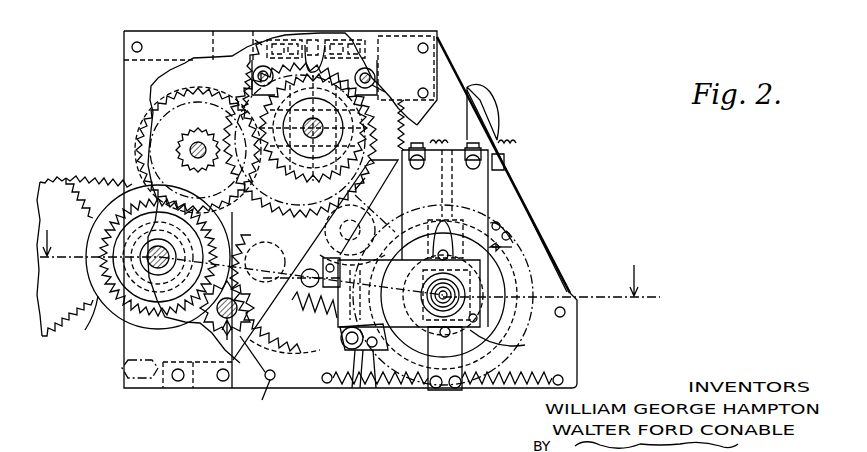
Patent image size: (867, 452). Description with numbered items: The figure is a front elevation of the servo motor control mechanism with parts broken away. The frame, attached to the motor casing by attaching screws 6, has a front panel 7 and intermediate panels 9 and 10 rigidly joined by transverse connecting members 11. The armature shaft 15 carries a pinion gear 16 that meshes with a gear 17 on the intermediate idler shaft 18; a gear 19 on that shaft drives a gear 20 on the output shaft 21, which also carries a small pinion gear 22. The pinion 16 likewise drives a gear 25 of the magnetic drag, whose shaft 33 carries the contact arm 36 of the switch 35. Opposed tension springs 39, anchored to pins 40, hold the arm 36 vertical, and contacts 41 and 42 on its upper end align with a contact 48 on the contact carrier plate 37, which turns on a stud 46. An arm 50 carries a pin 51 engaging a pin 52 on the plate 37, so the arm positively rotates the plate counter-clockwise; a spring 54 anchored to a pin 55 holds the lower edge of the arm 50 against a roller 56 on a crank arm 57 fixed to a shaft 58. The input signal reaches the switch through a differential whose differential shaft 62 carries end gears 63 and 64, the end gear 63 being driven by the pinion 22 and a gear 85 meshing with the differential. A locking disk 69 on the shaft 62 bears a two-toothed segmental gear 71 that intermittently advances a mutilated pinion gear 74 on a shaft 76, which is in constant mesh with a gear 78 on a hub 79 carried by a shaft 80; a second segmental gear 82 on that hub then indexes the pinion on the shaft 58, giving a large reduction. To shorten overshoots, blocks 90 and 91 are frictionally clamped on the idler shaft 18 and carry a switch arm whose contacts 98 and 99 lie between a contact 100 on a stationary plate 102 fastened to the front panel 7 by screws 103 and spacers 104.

The attaching screws 6 is at (350, 254).
The front panel 7 is at (437, 52).
The intermediate panel 9 is at (290, 392).
The intermediate panel 10 is at (332, 186).
The connecting members 11 is at (405, 35).
The armature shaft 15 is at (335, 236).
The pinion gear 16 is at (360, 192).
The gear 17 is at (218, 84).
The intermediate idler shaft 18 is at (313, 128).
The gear 19 is at (198, 150).
The gear 20 is at (193, 58).
The output shaft 21 is at (190, 148).
The pinion gear 22 is at (200, 124).
The gear 25 is at (505, 224).
The shaft 33 is at (462, 318).
The switch 35 is at (500, 247).
The contact arm 36 is at (462, 352).
The contact carrier plate 37 is at (490, 198).
The tension springs 39 is at (408, 390).
The pins 40 is at (326, 385).
The contact 41 is at (470, 171).
The contact 42 is at (445, 235).
The stud 46 is at (565, 378).
The contact 48 is at (505, 162).
The arm 50 is at (532, 265).
The pin 51 is at (518, 352).
The pin 52 is at (527, 332).
The spring 54 is at (275, 294).
The pin 55 is at (268, 392).
The roller 56 is at (353, 390).
The crank arm 57 is at (377, 390).
The shaft 58 is at (400, 290).
The differential shaft 62 is at (170, 257).
The end gear 63 is at (104, 186).
The end gear 64 is at (152, 322).
The locking disk 69 is at (90, 325).
The segmental gear 71 is at (168, 332).
The mutilated pinion gear 74 is at (257, 360).
The shaft 76 is at (240, 336).
The gear 78 is at (256, 226).
The hub 79 is at (269, 262).
The shaft 80 is at (300, 280).
The segmental gear 82 is at (314, 308).
The gear 85 is at (55, 180).
The block 90 is at (368, 124).
The block 91 is at (398, 138).
The contact 98 is at (330, 40).
The contact 99 is at (300, 40).
The contact 100 is at (340, 40).
The stationary plate 102 is at (255, 40).
The screws 103 is at (263, 74).
The spacers 104 is at (377, 86).